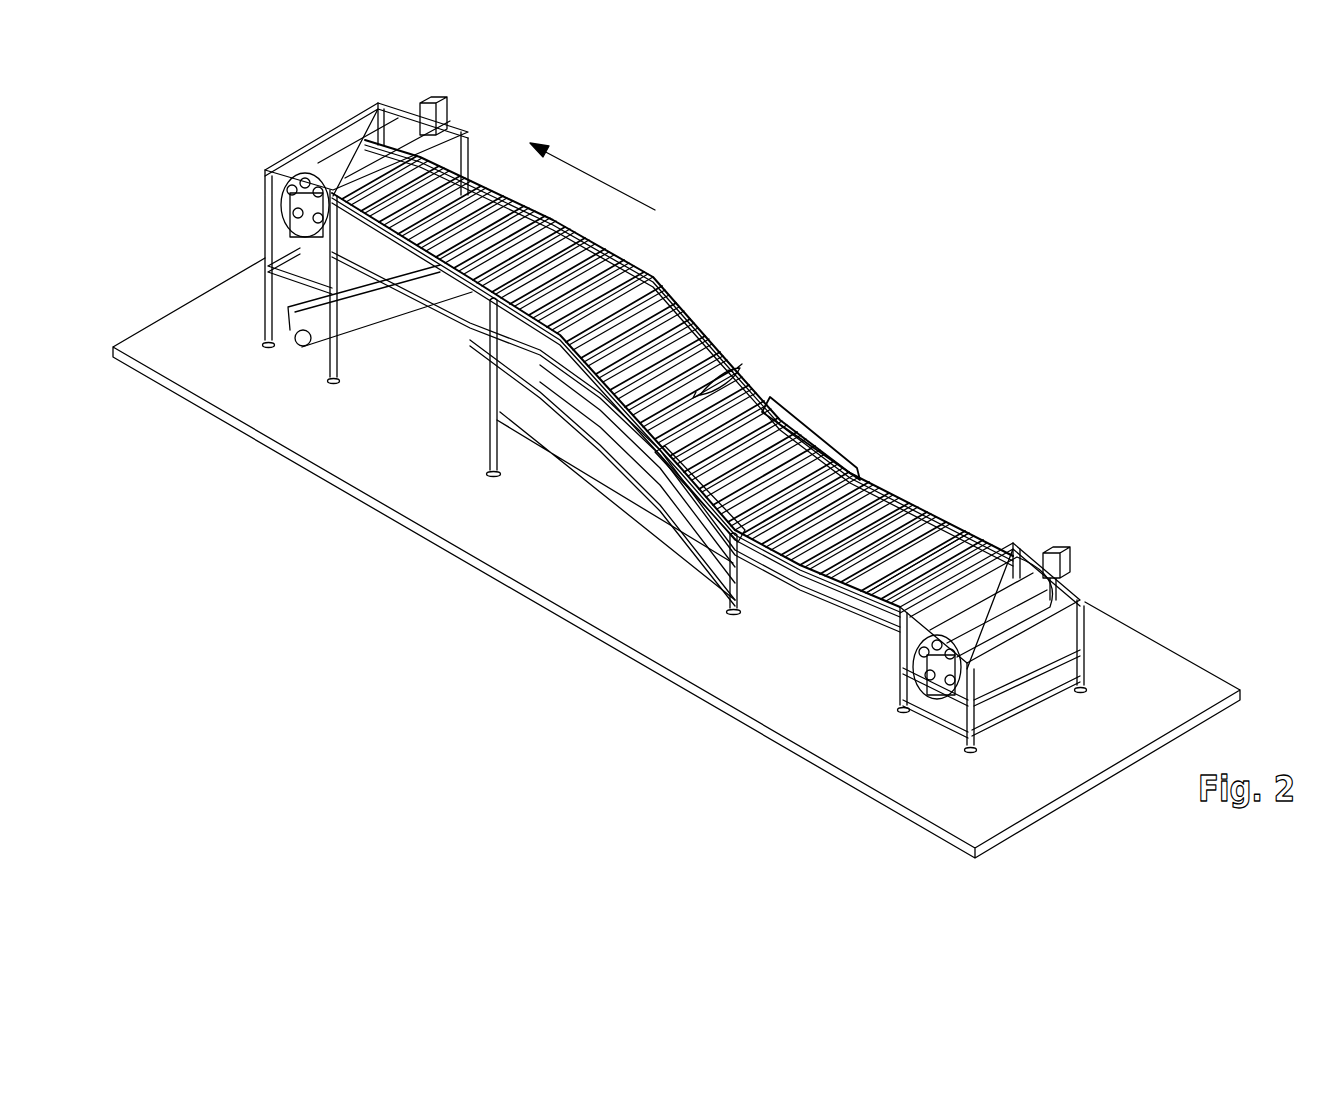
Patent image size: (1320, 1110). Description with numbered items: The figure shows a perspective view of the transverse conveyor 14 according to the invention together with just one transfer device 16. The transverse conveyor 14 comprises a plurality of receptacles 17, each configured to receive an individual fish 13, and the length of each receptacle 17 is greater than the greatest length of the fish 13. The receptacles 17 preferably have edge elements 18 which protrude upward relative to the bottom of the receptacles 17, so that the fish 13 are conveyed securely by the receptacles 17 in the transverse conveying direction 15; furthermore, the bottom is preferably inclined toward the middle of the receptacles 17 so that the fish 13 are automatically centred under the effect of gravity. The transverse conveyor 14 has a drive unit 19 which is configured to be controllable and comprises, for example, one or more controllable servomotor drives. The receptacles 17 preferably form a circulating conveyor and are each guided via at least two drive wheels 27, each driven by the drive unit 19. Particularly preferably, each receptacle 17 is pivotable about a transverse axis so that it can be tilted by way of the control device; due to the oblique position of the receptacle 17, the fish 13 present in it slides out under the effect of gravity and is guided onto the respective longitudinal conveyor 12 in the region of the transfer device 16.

The longitudinal conveyor 12 is at (280, 340).
The fish 13 is at (713, 372).
The transverse conveyor 14 is at (678, 302).
The transverse conveying direction 15 is at (596, 178).
The transfer device 16 is at (388, 340).
The receptacle 17 is at (900, 525).
The edge element 18 is at (940, 550).
The drive unit 19 is at (425, 105).
The drive wheel 27 is at (282, 209).